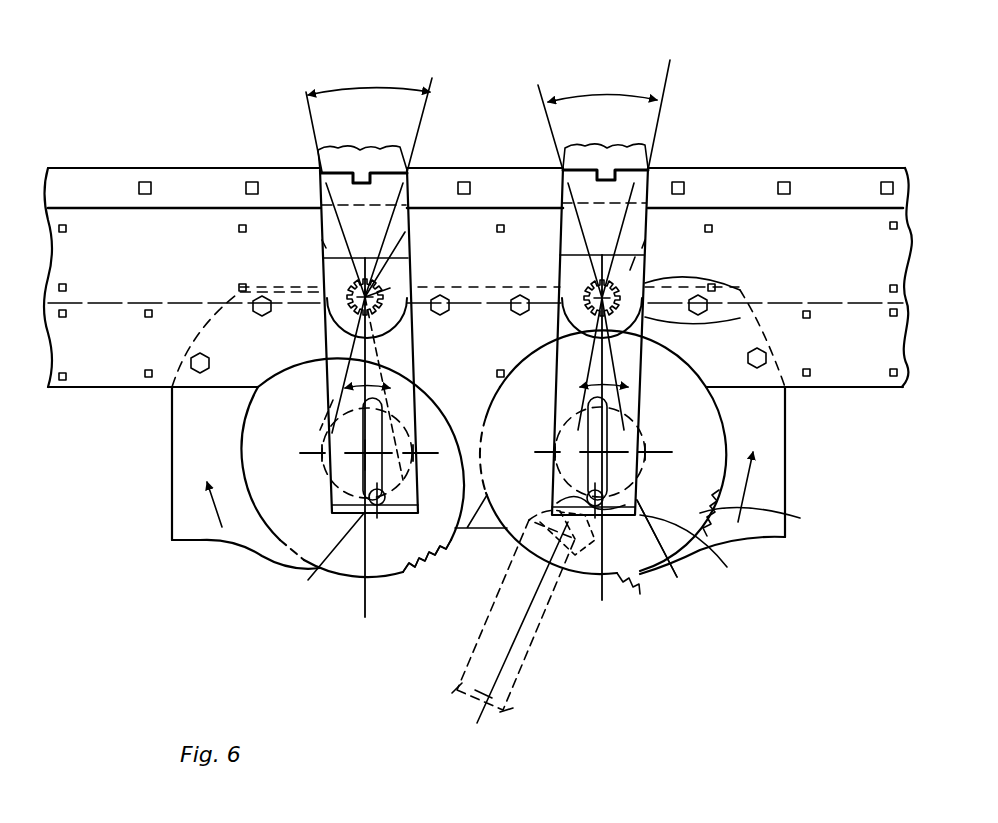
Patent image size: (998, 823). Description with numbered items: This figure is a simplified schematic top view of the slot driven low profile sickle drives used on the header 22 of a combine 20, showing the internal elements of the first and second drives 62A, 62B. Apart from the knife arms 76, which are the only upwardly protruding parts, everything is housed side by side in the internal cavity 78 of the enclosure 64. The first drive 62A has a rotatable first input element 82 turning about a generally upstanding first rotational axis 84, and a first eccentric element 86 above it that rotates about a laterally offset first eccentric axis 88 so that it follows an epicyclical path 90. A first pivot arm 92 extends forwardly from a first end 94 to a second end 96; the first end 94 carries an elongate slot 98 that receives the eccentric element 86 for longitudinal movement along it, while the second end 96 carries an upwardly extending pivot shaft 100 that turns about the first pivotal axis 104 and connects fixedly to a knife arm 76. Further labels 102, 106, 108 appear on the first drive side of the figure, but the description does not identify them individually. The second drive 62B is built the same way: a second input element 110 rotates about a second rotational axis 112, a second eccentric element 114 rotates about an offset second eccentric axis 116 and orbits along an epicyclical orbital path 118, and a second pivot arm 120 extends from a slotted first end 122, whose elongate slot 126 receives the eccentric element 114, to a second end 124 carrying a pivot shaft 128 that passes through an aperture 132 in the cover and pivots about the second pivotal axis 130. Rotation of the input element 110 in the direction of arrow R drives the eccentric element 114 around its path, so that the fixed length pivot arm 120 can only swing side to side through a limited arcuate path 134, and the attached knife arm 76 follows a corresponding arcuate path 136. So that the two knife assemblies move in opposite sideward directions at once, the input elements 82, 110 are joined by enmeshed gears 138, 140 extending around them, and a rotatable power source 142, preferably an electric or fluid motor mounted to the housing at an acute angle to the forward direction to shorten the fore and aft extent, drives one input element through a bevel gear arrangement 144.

The combine 20 is at (893, 100).
The header 22 is at (906, 167).
The first sickle drive 62A is at (652, 185).
The second sickle drive 62B is at (320, 184).
The enclosure 64 is at (785, 537).
The knife arm 76 is at (322, 245).
The internal cavity 78 is at (770, 495).
The first input element 82 is at (720, 405).
The first rotational axis 84 is at (630, 435).
The first eccentric element 86 is at (557, 503).
The first eccentric axis 88 is at (667, 554).
The epicyclical path 90 is at (643, 472).
The first pivot arm 92 is at (645, 338).
The first end 94 is at (697, 554).
The second end 96 is at (700, 324).
The elongate slot 98 is at (587, 420).
The pivot shaft 100 is at (585, 292).
The arm face 102 is at (635, 257).
The first pivotal axis 104 is at (712, 290).
The oscillation range 106 is at (630, 395).
The swing angle 108 is at (588, 98).
The second input element 110 is at (245, 447).
The second rotational axis 112 is at (365, 453).
The second eccentric element 114 is at (383, 506).
The second eccentric axis 116 is at (325, 570).
The epicyclical orbital path 118 is at (390, 418).
The second pivot arm 120 is at (325, 356).
The first end 122 is at (332, 507).
The second end 124 is at (410, 325).
The elongate slot 126 is at (440, 358).
The pivot shaft 128 is at (388, 288).
The second pivotal axis 130 is at (348, 294).
The aperture 132 is at (405, 232).
The arcuate path 134 is at (345, 391).
The arcuate path 136 is at (354, 90).
The gear 138 is at (768, 513).
The gear 140 is at (420, 575).
The rotatable power source 142 is at (537, 667).
The bevel gear arrangement 144 is at (636, 596).
The arrow R is at (213, 507).